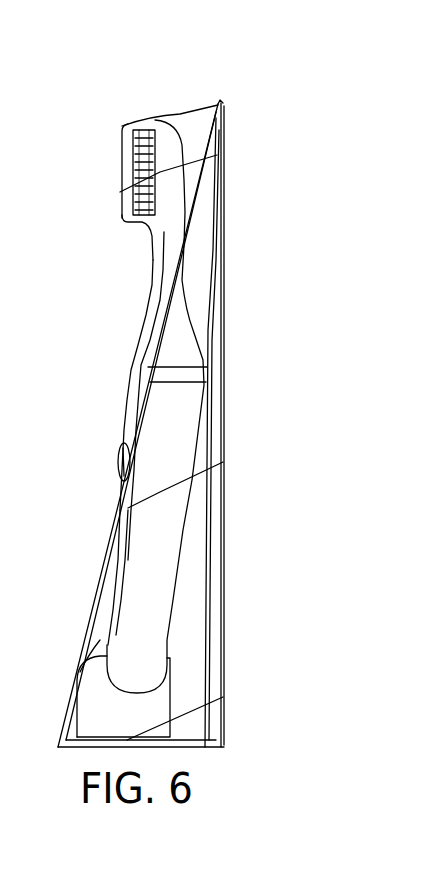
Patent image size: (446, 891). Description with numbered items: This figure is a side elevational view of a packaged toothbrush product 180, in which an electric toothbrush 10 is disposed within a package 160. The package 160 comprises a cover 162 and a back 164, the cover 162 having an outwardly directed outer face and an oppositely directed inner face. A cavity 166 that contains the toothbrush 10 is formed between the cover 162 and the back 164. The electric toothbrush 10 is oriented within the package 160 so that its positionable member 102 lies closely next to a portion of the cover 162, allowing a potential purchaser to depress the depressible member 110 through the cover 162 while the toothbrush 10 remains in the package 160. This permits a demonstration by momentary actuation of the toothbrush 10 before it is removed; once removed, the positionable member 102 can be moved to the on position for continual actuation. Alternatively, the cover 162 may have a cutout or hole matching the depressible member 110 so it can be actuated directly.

The packaged toothbrush product 180 is at (192, 72).
The package 160 is at (187, 112).
The cavity 166 is at (192, 260).
The back 164 is at (222, 553).
The electric toothbrush 10 is at (158, 427).
The cover 162 is at (157, 260).
The positionable member 102 is at (122, 452).
The depressible member 110 is at (122, 467).